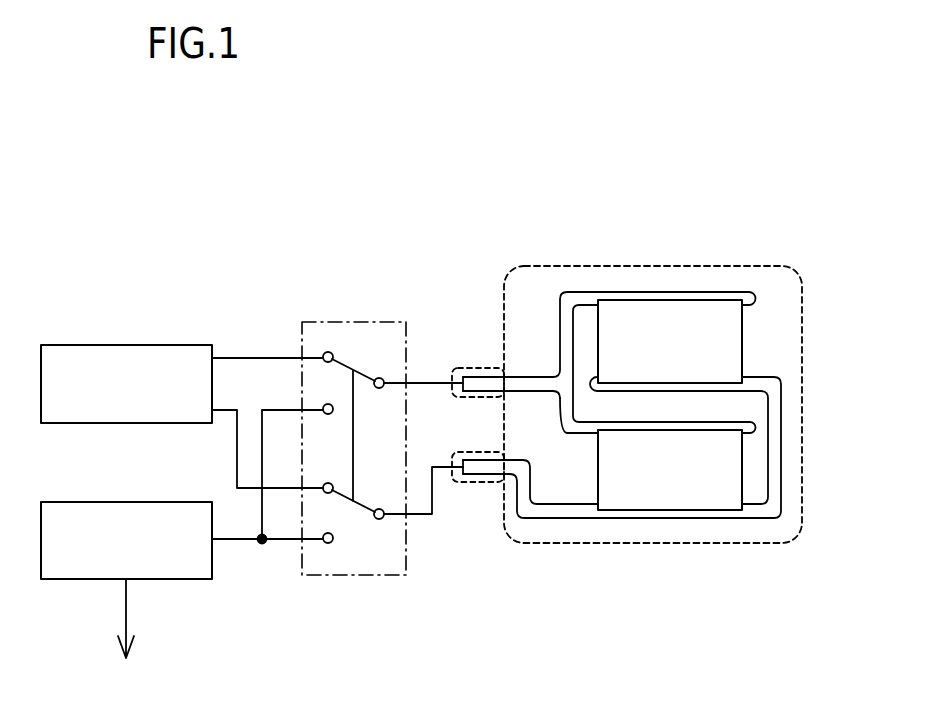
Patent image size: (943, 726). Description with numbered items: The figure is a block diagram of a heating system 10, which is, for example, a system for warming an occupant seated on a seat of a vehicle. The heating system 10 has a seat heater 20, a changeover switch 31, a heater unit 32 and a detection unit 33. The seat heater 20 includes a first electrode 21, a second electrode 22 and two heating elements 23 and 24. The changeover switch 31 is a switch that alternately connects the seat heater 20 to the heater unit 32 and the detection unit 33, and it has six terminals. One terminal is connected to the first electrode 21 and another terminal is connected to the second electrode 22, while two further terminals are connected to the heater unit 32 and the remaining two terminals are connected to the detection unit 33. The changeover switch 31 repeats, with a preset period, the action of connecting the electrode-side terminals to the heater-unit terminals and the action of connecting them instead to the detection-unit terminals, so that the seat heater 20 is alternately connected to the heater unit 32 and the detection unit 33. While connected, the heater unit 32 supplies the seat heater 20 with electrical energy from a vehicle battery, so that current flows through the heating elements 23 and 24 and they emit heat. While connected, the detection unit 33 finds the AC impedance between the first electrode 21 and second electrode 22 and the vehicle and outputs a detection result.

The heating system 10 is at (95, 207).
The seat heater 20 is at (559, 267).
The first electrode 21 is at (479, 368).
The second electrode 22 is at (470, 483).
The heating element 23 is at (742, 337).
The heating element 24 is at (597, 461).
The changeover switch 31 is at (322, 321).
The heater unit 32 is at (76, 345).
The detection unit 33 is at (76, 502).